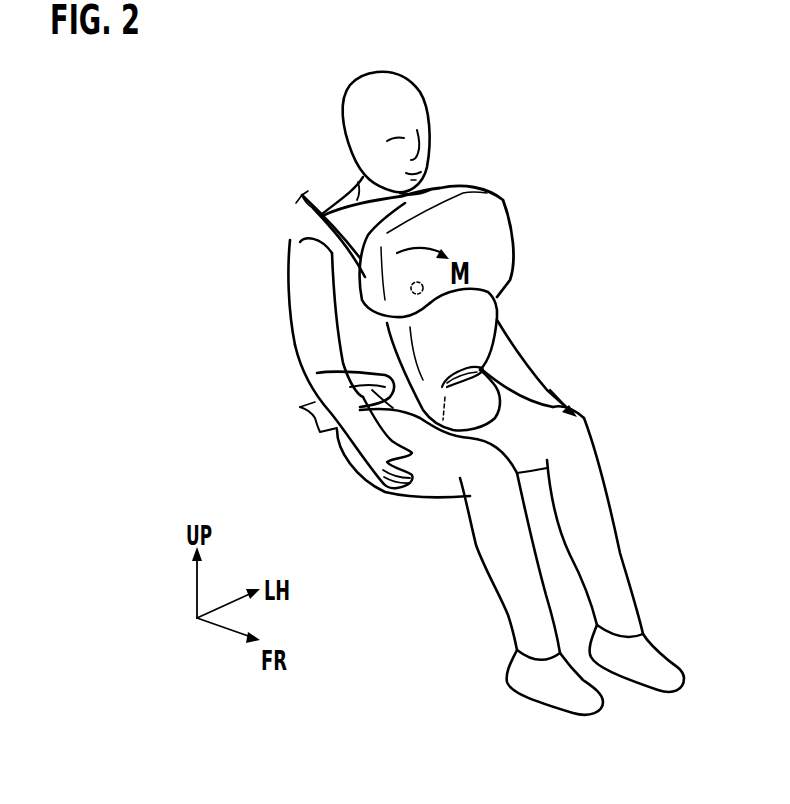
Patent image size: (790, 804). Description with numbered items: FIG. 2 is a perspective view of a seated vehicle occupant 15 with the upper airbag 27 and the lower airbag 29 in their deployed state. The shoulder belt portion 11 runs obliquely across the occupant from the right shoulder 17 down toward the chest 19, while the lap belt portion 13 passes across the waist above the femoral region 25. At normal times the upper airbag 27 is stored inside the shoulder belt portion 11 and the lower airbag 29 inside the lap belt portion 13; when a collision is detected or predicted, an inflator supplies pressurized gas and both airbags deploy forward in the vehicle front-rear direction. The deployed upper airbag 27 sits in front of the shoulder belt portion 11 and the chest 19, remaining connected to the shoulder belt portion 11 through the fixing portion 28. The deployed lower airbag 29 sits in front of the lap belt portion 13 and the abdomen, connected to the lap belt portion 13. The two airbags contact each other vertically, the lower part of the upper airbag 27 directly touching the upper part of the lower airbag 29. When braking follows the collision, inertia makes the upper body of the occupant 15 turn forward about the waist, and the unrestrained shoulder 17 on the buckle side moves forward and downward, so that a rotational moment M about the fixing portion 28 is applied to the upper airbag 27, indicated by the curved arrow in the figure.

The vehicle occupant 15 is at (359, 74).
The shoulder belt portion 11 is at (298, 211).
The right shoulder 17 is at (327, 245).
The chest 19 is at (353, 282).
The fixing portion 28 is at (412, 292).
The lap belt portion 13 is at (317, 373).
The upper airbag 27 is at (478, 230).
The lower airbag 29 is at (473, 322).
The femoral region 25 is at (527, 430).